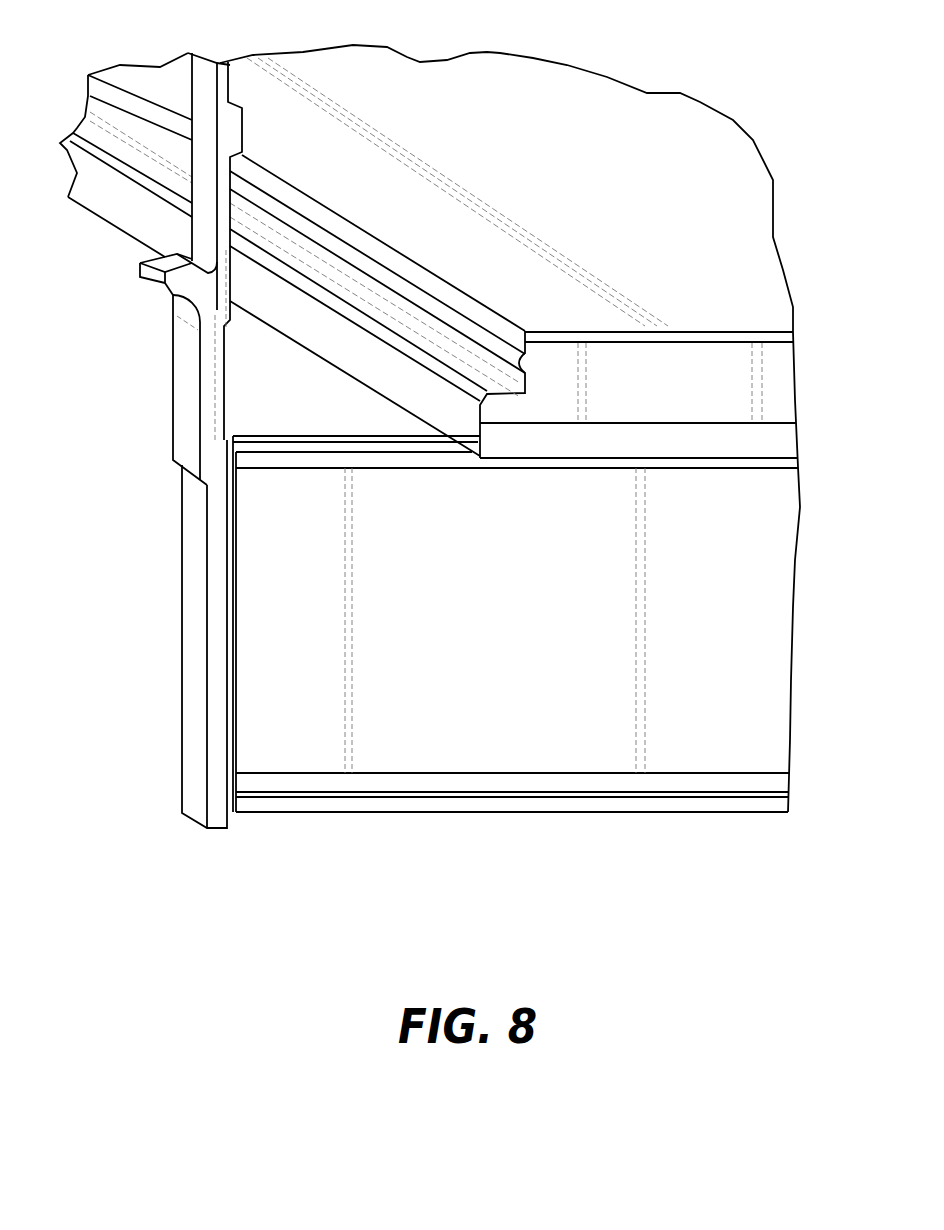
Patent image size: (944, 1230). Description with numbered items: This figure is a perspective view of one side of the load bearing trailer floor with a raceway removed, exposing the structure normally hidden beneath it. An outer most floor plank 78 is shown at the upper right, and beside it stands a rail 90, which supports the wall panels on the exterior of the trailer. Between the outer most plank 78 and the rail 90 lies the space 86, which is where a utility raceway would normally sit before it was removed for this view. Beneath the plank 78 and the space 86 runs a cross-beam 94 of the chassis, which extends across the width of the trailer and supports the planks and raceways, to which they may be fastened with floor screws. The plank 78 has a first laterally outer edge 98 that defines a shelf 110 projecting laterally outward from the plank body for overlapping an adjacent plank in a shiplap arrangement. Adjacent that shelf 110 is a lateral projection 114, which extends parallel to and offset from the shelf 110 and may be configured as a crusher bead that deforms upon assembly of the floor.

The floor plank 78 is at (760, 285).
The space 86 is at (256, 419).
The rail 90 is at (190, 604).
The cross-beam 94 is at (295, 757).
The first laterally outer edge 98 is at (96, 243).
The shelf 110 is at (750, 445).
The lateral projection 114 is at (415, 292).